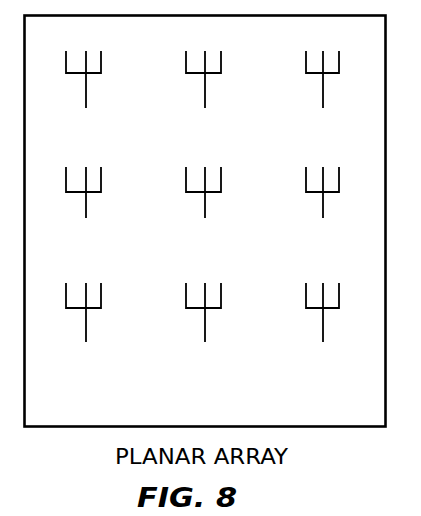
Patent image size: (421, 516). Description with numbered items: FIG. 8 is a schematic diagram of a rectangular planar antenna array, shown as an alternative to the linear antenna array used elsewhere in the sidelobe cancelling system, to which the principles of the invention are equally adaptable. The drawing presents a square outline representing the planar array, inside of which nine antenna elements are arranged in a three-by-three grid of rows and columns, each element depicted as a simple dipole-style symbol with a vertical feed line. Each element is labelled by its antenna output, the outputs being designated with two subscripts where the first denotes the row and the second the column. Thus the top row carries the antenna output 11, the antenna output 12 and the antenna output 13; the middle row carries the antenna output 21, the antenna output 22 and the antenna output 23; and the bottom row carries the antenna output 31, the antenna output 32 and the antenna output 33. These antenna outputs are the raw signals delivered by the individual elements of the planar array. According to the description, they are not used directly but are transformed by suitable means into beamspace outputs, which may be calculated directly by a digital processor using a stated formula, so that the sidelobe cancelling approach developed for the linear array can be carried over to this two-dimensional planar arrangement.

The antenna output V11 11 is at (83, 96).
The antenna output V12 12 is at (203, 96).
The antenna output V13 13 is at (322, 96).
The antenna output V21 21 is at (83, 208).
The antenna output V22 22 is at (203, 208).
The antenna output V23 23 is at (322, 208).
The antenna output V31 31 is at (83, 329).
The antenna output V32 32 is at (203, 329).
The antenna output V33 33 is at (322, 329).